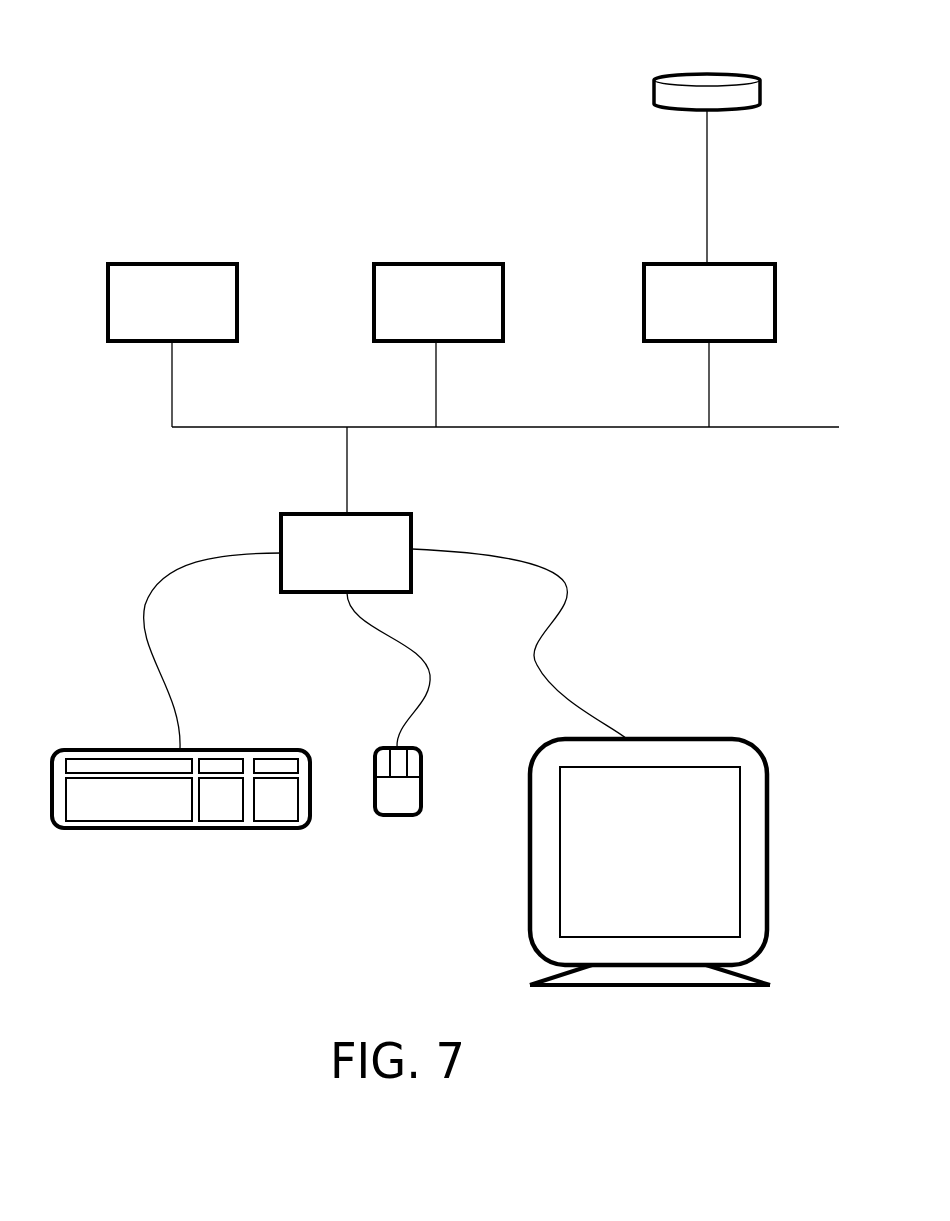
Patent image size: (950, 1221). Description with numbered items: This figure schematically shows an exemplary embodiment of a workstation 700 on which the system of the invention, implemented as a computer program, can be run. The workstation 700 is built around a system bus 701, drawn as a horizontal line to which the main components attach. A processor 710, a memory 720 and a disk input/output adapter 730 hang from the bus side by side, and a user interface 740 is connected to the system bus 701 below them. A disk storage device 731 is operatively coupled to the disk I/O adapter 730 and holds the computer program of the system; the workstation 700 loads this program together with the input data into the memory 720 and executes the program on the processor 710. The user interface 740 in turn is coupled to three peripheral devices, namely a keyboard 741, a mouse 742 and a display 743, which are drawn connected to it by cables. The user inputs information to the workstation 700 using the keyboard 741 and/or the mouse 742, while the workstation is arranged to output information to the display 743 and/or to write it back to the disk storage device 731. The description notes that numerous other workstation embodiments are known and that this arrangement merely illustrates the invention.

The workstation 700 is at (176, 70).
The system bus 701 is at (172, 428).
The processor 710 is at (193, 315).
The memory 720 is at (458, 315).
The disk input/output adapter 730 is at (728, 315).
The disk storage device 731 is at (652, 89).
The user interface 740 is at (366, 565).
The keyboard 741 is at (178, 831).
The mouse 742 is at (398, 818).
The display 743 is at (703, 737).